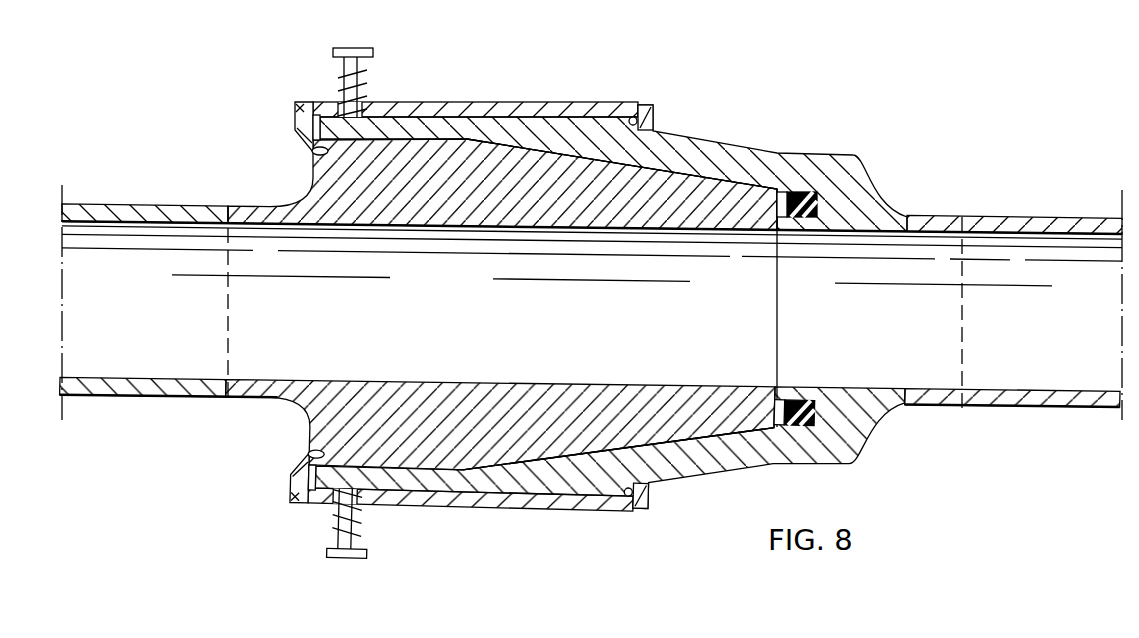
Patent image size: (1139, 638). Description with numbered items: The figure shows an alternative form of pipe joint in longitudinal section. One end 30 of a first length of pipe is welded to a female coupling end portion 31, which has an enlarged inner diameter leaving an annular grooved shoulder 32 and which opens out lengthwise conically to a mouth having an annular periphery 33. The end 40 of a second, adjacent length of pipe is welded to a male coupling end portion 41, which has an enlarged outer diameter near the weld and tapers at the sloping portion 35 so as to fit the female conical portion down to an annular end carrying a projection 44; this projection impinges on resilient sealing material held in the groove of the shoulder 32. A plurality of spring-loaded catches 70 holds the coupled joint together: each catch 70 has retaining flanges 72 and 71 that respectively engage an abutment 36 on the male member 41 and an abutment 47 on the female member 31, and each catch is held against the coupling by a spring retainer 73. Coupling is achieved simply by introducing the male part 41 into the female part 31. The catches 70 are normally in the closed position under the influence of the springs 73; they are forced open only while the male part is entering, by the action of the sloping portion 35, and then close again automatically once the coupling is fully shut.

The end of first length of pipe 30 is at (1046, 326).
The female coupling end portion 31 is at (860, 183).
The annular grooved shoulder 32 is at (795, 220).
The annular periphery 33 is at (314, 130).
The tapering portion 35 is at (580, 150).
The abutment on male member 36 is at (314, 152).
The end of second length of pipe 40 is at (151, 316).
The male coupling end portion 41 is at (312, 200).
The projection 44 is at (778, 205).
The abutment on female member 47 is at (633, 117).
The spring-loaded catch 70 is at (440, 103).
The retaining flange 71 is at (655, 121).
The retaining flange 72 is at (296, 103).
The spring retainer 73 is at (365, 48).